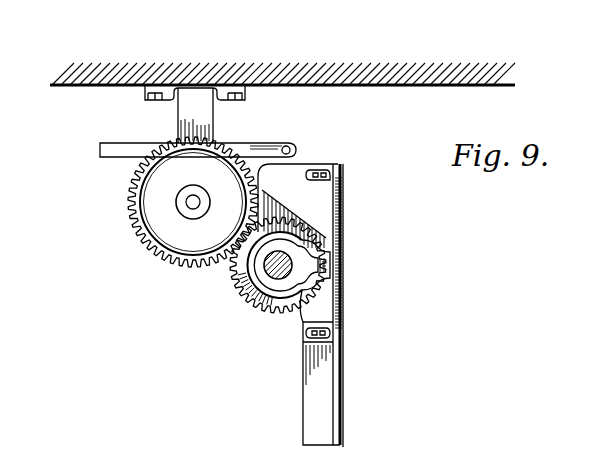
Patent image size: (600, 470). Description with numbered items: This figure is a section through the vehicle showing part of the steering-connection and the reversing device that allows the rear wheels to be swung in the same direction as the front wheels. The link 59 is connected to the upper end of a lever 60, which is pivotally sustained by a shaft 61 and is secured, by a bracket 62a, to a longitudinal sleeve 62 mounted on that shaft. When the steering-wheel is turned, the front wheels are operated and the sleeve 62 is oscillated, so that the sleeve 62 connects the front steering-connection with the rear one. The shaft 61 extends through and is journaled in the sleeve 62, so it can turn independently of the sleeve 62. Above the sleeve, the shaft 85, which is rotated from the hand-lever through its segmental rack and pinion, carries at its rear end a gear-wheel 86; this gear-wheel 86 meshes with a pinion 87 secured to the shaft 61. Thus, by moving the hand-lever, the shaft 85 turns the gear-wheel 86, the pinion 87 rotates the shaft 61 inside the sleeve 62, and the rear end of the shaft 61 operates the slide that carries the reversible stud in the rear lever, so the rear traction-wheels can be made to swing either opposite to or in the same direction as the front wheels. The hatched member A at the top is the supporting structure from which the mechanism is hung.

The ceiling / support A is at (269, 80).
The link 59 is at (135, 155).
The lever 60 is at (297, 188).
The shaft 61 is at (324, 274).
The longitudinal sleeve 62 is at (266, 272).
The bracket 62a is at (300, 283).
The shaft 85 is at (188, 206).
The gear-wheel 86 is at (160, 251).
The pinion 87 is at (300, 238).